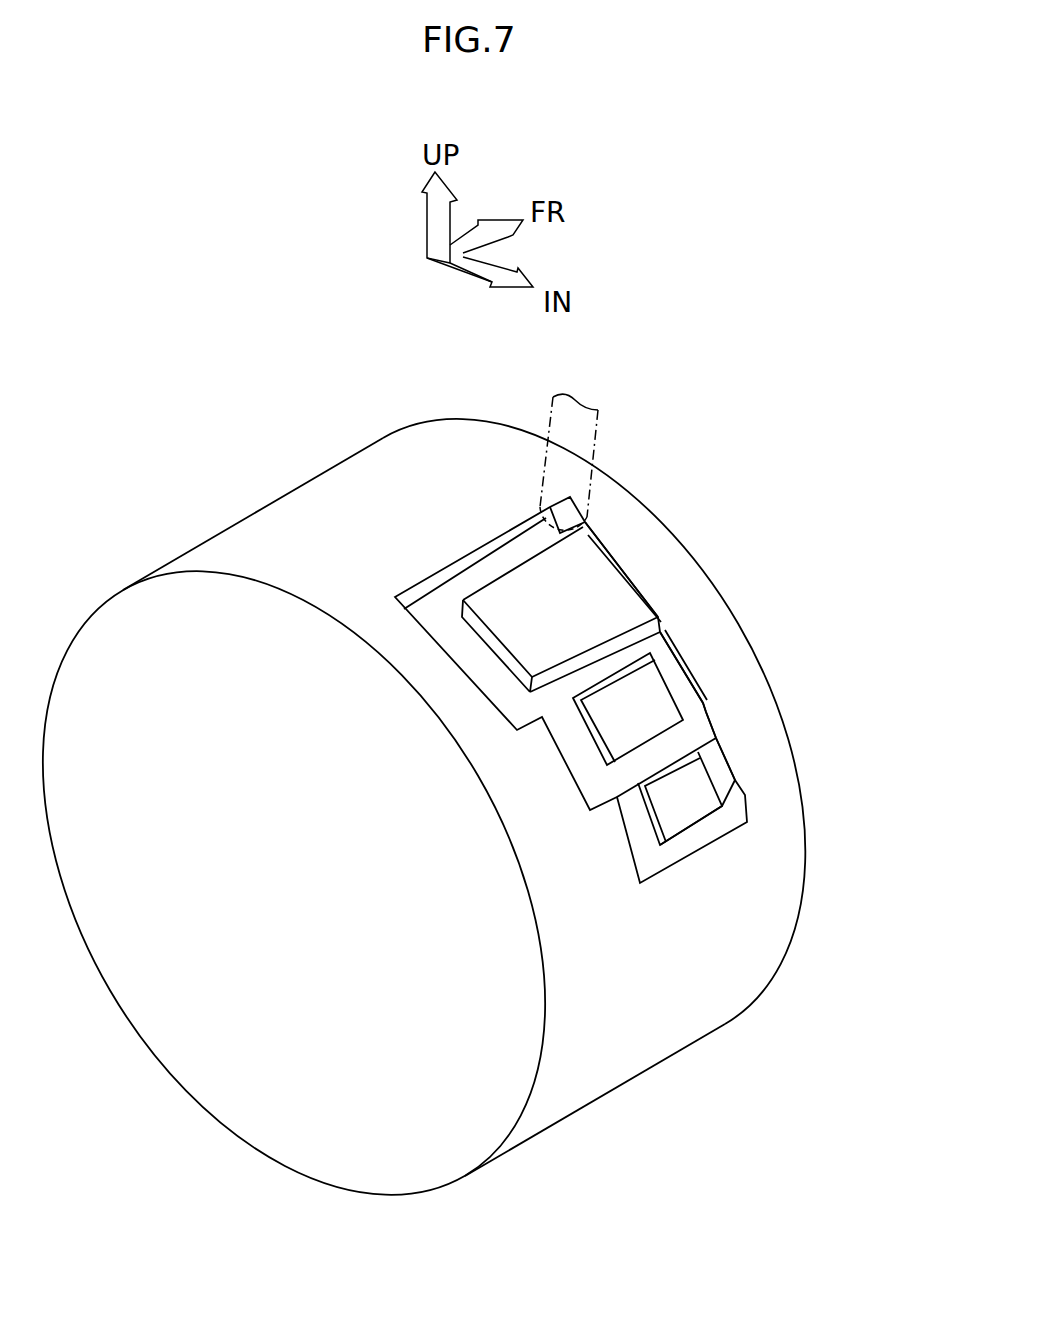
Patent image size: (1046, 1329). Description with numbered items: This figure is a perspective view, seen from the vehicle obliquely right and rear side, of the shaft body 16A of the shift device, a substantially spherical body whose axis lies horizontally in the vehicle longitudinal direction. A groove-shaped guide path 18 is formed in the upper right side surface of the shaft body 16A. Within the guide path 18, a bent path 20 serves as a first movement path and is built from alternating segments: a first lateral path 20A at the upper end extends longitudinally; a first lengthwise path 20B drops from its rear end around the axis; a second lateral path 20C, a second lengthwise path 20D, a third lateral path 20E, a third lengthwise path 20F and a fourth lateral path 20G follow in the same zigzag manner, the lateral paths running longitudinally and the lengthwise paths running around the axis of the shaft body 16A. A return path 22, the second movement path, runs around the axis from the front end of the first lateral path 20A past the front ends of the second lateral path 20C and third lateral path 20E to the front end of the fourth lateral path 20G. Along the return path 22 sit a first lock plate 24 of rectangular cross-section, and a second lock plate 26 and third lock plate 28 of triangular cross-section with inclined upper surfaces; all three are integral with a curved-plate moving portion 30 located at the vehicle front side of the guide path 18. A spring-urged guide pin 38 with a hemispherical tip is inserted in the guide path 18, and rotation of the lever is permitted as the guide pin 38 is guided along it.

The shaft body 16A is at (266, 418).
The guide path 18 is at (472, 578).
The bent path 20 is at (425, 596).
The first lateral path 20A is at (512, 560).
The first lengthwise path 20B is at (478, 653).
The second lateral path 20C is at (545, 716).
The second lengthwise path 20D is at (573, 740).
The third lateral path 20E is at (640, 760).
The third lengthwise path 20F is at (636, 822).
The fourth lateral path 20G is at (688, 835).
The return path 22 is at (700, 732).
The first lock plate 24 is at (613, 580).
The second lock plate 26 is at (683, 687).
The third lock plate 28 is at (718, 777).
The moving portion 30 is at (700, 587).
The guide pin 38 is at (598, 436).